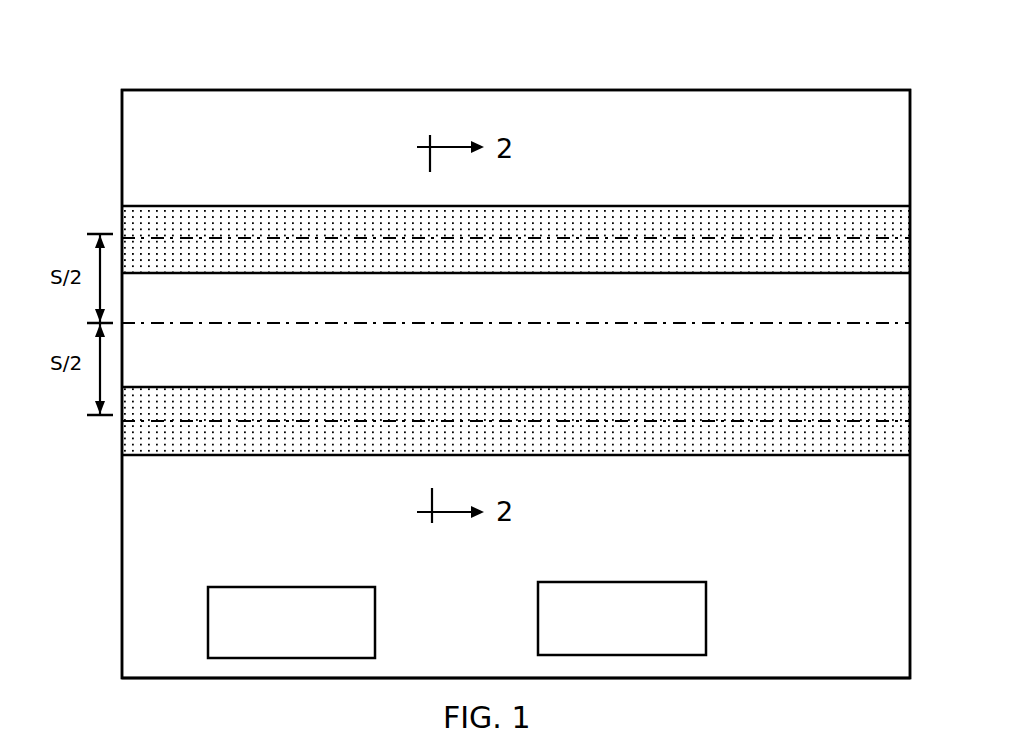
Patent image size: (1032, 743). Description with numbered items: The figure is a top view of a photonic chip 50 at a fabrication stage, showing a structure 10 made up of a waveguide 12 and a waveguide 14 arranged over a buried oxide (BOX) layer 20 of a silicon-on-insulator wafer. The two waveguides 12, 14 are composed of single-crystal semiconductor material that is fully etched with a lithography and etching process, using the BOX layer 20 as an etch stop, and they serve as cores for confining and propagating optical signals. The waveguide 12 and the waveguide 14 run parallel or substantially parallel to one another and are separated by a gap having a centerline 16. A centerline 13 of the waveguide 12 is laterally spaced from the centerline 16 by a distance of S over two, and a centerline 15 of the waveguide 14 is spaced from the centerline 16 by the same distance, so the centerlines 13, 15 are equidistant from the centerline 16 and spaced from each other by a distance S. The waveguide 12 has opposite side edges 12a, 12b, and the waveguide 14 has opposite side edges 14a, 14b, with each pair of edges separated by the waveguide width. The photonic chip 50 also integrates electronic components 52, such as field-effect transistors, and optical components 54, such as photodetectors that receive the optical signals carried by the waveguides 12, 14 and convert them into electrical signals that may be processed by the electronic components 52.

The photonic chip 50 is at (120, 64).
The structure 10 is at (733, 176).
The buried oxide (BOX) layer 20 is at (153, 653).
The waveguide 14 is at (302, 222).
The side edge 14a is at (360, 206).
The side edge 14b is at (316, 277).
The centerline 15 is at (659, 238).
The centerline 16 is at (570, 324).
The waveguide 12 is at (308, 426).
The side edge 12a is at (750, 455).
The side edge 12b is at (315, 387).
The centerline 13 is at (617, 421).
The optical components 54 is at (376, 625).
The electronic components 52 is at (706, 617).